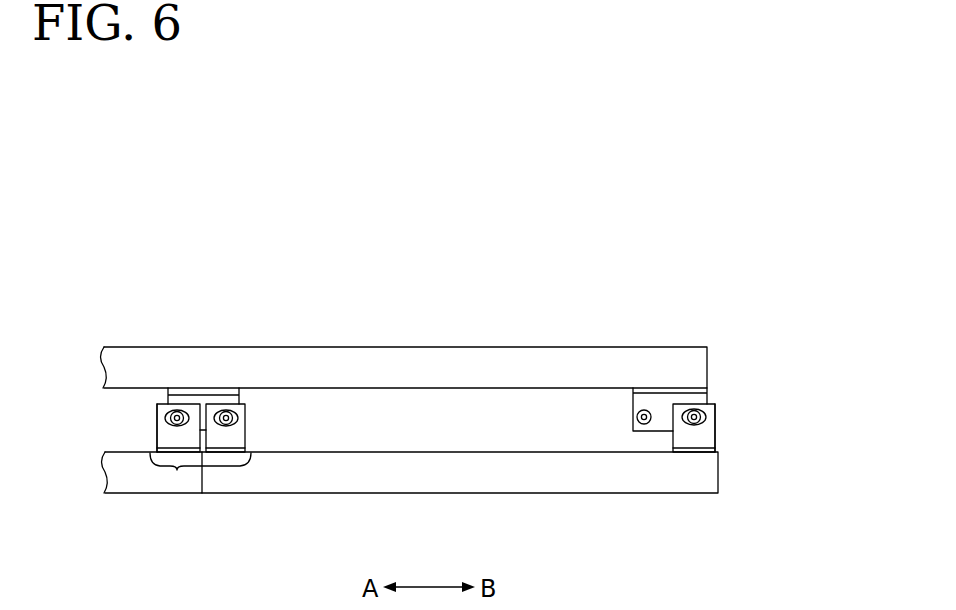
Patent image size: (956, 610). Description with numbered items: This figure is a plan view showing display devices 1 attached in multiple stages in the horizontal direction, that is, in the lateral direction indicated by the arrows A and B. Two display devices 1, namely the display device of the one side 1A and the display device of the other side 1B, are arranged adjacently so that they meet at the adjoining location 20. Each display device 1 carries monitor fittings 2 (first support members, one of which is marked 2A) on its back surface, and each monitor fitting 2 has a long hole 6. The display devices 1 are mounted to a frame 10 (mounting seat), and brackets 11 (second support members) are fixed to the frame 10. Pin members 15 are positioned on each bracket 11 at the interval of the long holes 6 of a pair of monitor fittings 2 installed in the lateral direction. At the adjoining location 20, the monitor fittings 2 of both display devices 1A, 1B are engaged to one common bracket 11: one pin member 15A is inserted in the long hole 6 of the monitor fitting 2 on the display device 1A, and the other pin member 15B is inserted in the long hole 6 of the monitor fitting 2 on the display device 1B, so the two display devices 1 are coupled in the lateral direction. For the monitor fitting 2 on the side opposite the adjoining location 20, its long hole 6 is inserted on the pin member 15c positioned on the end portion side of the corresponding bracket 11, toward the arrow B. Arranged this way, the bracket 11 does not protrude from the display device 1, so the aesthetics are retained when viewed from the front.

The display device 1 is at (405, 527).
The display device of the one side 1A is at (131, 482).
The display device of the other side 1B is at (580, 478).
The monitor fitting 2 is at (434, 440).
The monitor fitting 2A is at (147, 427).
The long hole 6 is at (168, 406).
The frame 10 is at (474, 360).
The bracket 11 is at (253, 393).
The pin member 15 is at (646, 410).
The pin member 15A is at (176, 412).
The pin member 15B is at (227, 412).
The pin member 15c is at (695, 410).
The adjoining location 20 is at (177, 471).